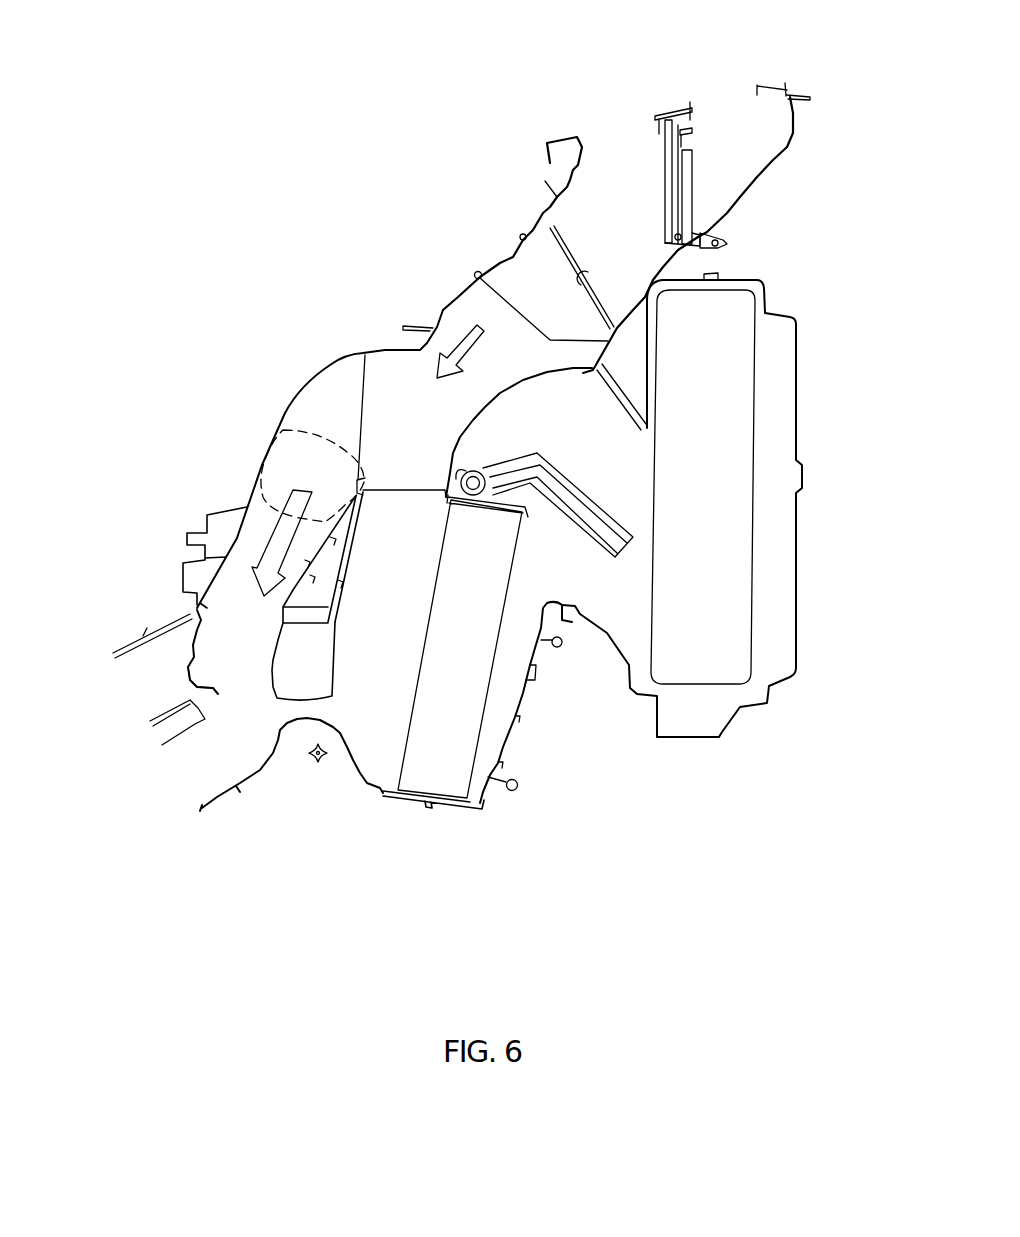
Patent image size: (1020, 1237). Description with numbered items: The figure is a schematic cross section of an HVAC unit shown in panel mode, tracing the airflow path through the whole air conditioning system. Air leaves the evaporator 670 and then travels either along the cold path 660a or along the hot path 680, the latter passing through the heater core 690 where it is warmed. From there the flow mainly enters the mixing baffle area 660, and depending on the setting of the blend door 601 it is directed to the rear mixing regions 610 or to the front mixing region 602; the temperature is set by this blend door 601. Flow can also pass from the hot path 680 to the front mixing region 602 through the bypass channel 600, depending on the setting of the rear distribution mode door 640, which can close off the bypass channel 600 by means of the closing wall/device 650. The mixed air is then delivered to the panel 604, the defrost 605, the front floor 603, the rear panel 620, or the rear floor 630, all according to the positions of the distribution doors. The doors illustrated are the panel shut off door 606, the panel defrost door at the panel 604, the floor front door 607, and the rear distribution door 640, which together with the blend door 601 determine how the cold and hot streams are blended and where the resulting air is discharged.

The bypass channel 600 is at (298, 712).
The blend door 601 is at (586, 500).
The front mixing region 602 is at (528, 293).
The front floor 603 is at (303, 455).
The panel 604 is at (678, 198).
The defrost 605 is at (610, 158).
The panel shut off door 606 is at (558, 245).
The floor front door 607 is at (323, 437).
The rear mixing regions 610 is at (278, 530).
The rear panel 620 is at (130, 678).
The rear floor 630 is at (175, 780).
The rear distribution mode door 640 is at (197, 610).
The closing wall/device 650 is at (220, 692).
The mixing baffle area 660 is at (453, 398).
The cold path 660a is at (462, 337).
The evaporator 670 is at (715, 660).
The hot path 680 is at (375, 753).
The heater core 690 is at (450, 765).